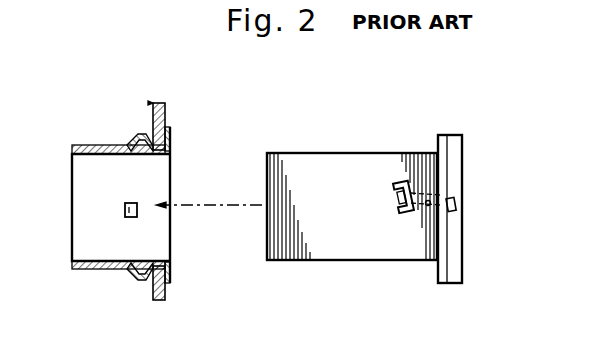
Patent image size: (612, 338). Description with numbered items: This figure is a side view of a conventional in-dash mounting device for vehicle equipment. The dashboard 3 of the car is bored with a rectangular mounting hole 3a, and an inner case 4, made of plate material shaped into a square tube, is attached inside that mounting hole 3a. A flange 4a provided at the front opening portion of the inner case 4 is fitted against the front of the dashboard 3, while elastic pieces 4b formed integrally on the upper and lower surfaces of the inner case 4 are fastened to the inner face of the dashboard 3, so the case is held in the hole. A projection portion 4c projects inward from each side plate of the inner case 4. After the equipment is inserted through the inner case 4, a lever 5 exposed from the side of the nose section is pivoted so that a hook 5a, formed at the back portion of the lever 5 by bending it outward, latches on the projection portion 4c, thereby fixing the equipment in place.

The dashboard 3 is at (166, 110).
The mounting hole 3a is at (162, 252).
The inner case 4 is at (83, 203).
The flange 4a is at (168, 146).
The elastic pieces 4b is at (143, 143).
The projection portion 4c is at (134, 219).
The lever 5 is at (460, 205).
The hook 5a is at (398, 198).